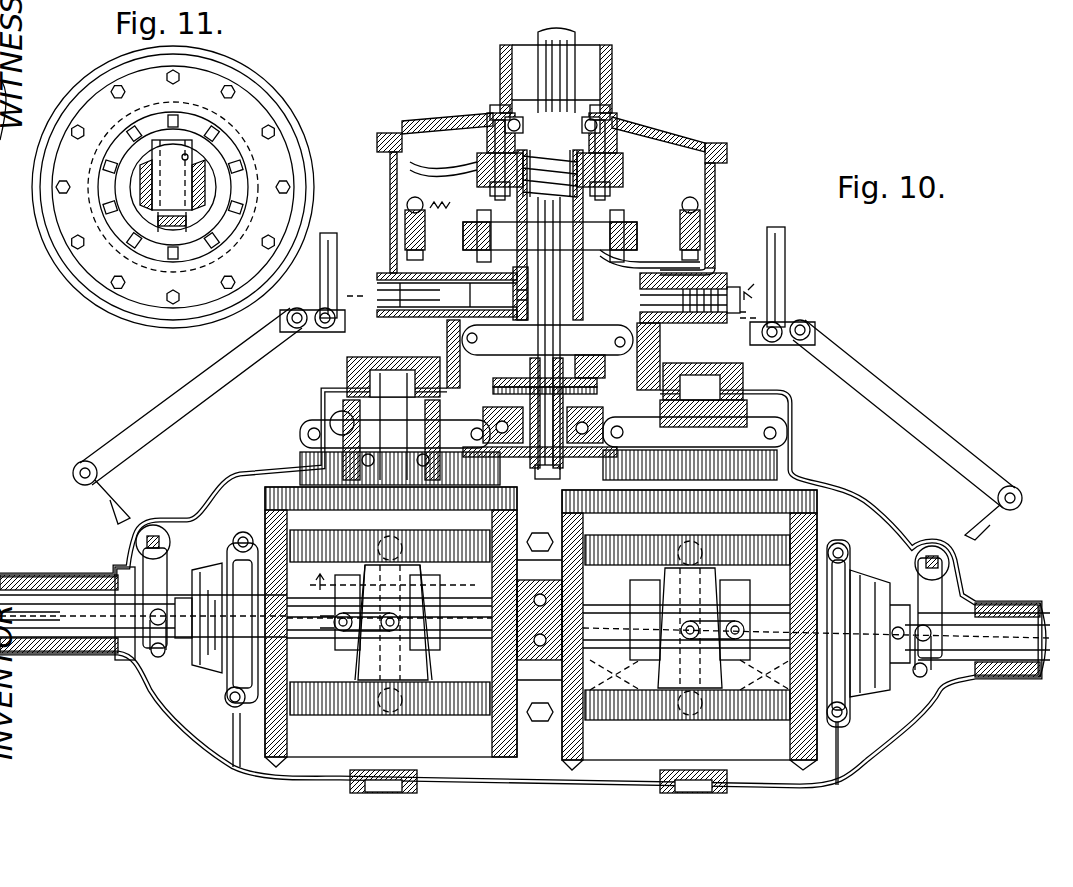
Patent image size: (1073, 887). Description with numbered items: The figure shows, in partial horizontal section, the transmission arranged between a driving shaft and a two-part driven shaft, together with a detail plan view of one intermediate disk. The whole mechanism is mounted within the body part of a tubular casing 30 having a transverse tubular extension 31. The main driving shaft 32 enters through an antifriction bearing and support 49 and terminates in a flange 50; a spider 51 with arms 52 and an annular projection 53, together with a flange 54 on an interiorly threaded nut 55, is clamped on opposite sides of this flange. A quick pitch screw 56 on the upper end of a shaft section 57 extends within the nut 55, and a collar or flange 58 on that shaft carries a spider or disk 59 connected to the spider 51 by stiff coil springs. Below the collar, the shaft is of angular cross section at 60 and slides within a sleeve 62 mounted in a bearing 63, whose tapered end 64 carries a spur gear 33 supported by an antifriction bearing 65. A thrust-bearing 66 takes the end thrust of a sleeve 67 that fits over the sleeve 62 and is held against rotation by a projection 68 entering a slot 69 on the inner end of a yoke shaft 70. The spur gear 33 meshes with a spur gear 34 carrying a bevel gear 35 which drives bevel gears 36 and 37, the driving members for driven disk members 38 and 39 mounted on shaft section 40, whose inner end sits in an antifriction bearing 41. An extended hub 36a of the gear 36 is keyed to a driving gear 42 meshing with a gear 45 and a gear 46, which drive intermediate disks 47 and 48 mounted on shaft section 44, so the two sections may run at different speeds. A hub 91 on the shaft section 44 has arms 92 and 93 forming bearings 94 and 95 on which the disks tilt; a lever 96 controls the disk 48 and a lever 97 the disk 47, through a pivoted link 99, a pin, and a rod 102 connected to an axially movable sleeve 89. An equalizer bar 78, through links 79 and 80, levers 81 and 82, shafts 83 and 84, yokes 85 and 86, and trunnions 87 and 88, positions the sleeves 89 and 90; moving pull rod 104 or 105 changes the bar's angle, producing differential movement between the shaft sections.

In FIG. 10, the casing body part 30 is at (867, 505).
In FIG. 10, the transverse tubular extension 31 is at (714, 233).
In FIG. 10, the main driving shaft 32 is at (547, 75).
In FIG. 10, the spur gear 33 is at (420, 447).
In FIG. 10, the spur gear 34 is at (723, 470).
In FIG. 10, the bevel gear 35 is at (787, 490).
In FIG. 10, the bevel gear 36 is at (577, 737).
In FIG. 10, the extended hub 36a is at (597, 650).
In FIG. 10, the bevel gear 37 is at (790, 740).
In FIG. 10, the driven disk member 38 is at (850, 540).
In FIG. 10, the driven disk member 39 is at (640, 703).
In FIG. 10, the shaft section 40 is at (1007, 670).
In FIG. 10, the antifriction bearing 41 is at (583, 603).
In FIG. 10, the driving gear 42 is at (490, 740).
In FIG. 10, the shaft section 44 is at (60, 625).
In FIG. 10, the gear 45 is at (300, 487).
In FIG. 10, the gear 46 is at (265, 720).
In FIG. 11, the intermediate disk 47 is at (92, 258).
In FIG. 10, the intermediate disk 47 is at (273, 530).
In FIG. 10, the intermediate disk 48 is at (226, 700).
In FIG. 10, the antifriction bearing and support 49 is at (607, 123).
In FIG. 10, the flange 50 is at (490, 157).
In FIG. 10, the spider 51 is at (443, 163).
In FIG. 10, the spider arms 52 is at (690, 172).
In FIG. 10, the annular projection 53 is at (620, 160).
In FIG. 10, the flange 54 is at (477, 180).
In FIG. 10, the interiorly threaded nut 55 is at (490, 113).
In FIG. 10, the quick pitch screw 56 is at (523, 185).
In FIG. 10, the shaft section 57 is at (617, 133).
In FIG. 10, the collar or flange 58 is at (600, 233).
In FIG. 10, the spider or disk 59 is at (660, 200).
In FIG. 10, the angular cross section portion 60 is at (583, 272).
In FIG. 10, the sleeve 62 is at (580, 368).
In FIG. 10, the bearing 63 is at (503, 337).
In FIG. 10, the tapered end 64 is at (577, 413).
In FIG. 10, the antifriction bearing 65 is at (492, 413).
In FIG. 10, the thrust-bearing 66 is at (703, 274).
In FIG. 10, the sleeve 67 is at (403, 253).
In FIG. 10, the projection 68 is at (560, 303).
In FIG. 10, the slot 69 is at (417, 287).
In FIG. 10, the yoke shaft 70 is at (437, 297).
In FIG. 10, the equalizer bar 78 is at (788, 320).
In FIG. 10, the link 79 is at (192, 388).
In FIG. 10, the link 80 is at (897, 407).
In FIG. 10, the lever 81 is at (110, 497).
In FIG. 10, the lever 82 is at (992, 517).
In FIG. 10, the shaft 83 is at (152, 535).
In FIG. 10, the shaft 84 is at (933, 556).
In FIG. 10, the yoke 85 is at (153, 573).
In FIG. 10, the yoke 86 is at (930, 595).
In FIG. 10, the trunnions 87 is at (147, 653).
In FIG. 10, the trunnions 88 is at (913, 667).
In FIG. 10, the axially movable sleeve 89 is at (150, 652).
In FIG. 10, the axially movable sleeve 90 is at (937, 673).
In FIG. 10, the hub 91 is at (430, 627).
In FIG. 10, the arm 92 is at (403, 590).
In FIG. 10, the arm 93 is at (373, 657).
In FIG. 11, the bearing 94 is at (205, 168).
In FIG. 10, the bearing 94 is at (330, 423).
In FIG. 10, the bearing 95 is at (400, 705).
In FIG. 10, the lever 96 is at (377, 657).
In FIG. 11, the lever 97 is at (160, 222).
In FIG. 10, the lever 97 is at (233, 543).
In FIG. 10, the pivoted link 99 is at (280, 590).
In FIG. 10, the rod 102 is at (213, 627).
In FIG. 10, the pull rod 104 is at (297, 330).
In FIG. 10, the pull rod 105 is at (775, 263).